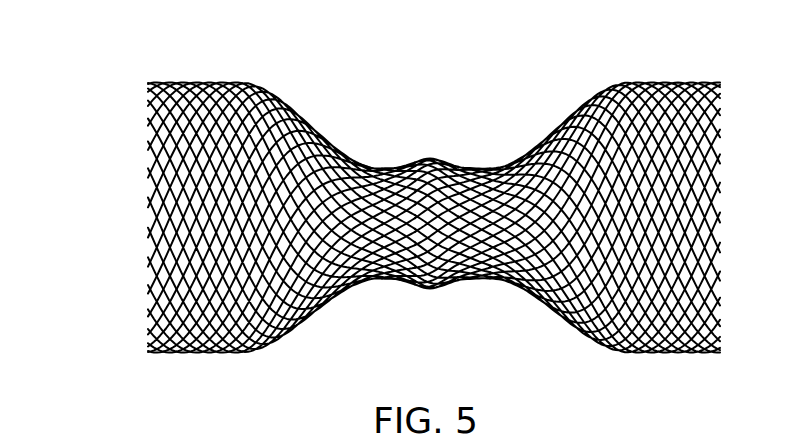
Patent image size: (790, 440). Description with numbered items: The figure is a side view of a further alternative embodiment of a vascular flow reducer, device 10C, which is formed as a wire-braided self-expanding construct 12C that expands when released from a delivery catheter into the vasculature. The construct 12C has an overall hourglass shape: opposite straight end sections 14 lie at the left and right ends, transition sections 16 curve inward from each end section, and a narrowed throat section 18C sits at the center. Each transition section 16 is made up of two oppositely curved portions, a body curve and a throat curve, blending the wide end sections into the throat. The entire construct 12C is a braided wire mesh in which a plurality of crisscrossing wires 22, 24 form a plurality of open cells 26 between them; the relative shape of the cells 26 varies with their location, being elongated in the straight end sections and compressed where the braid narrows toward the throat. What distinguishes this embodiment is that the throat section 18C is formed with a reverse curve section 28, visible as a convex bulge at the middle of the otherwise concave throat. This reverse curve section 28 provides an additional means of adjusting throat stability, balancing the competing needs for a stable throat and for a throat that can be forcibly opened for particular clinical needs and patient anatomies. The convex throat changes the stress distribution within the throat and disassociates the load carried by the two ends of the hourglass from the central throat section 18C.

The vascular flow reducer 10C is at (293, 66).
The wire-braided self-expanding construct 12C is at (657, 62).
The straight end section 14 is at (174, 362).
The transition section 16 is at (532, 130).
The throat section 18C is at (432, 296).
The wire 22 is at (150, 135).
The wire 24 is at (150, 124).
The open cell 26 is at (150, 192).
The reverse curve section 28 is at (455, 276).